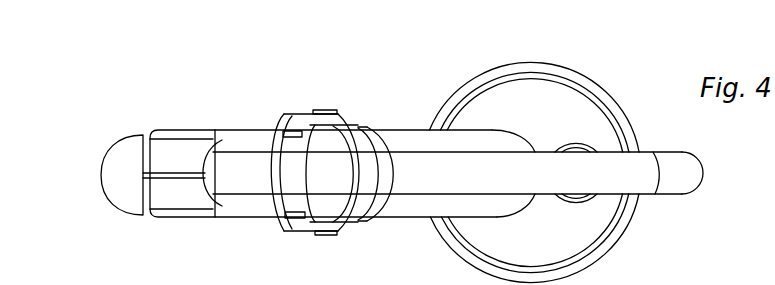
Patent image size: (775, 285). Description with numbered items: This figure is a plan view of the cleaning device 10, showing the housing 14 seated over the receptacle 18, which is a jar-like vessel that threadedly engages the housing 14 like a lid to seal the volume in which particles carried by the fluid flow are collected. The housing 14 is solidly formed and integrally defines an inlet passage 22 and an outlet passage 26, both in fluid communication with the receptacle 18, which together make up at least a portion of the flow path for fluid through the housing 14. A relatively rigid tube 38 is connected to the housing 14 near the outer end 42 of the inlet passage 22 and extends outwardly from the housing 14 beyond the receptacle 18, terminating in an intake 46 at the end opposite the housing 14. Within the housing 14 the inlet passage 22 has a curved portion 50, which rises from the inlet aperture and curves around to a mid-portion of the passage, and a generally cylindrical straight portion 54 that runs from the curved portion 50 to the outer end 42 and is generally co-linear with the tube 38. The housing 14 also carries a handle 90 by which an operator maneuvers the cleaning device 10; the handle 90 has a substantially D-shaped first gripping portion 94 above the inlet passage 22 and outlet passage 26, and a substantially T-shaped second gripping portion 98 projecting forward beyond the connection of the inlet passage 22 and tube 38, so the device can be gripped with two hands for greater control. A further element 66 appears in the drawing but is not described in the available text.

The cleaning device 10 is at (148, 86).
The housing 14 is at (611, 230).
The receptacle 18 is at (592, 77).
The inlet passage 22 is at (415, 219).
The outlet passage 26 is at (573, 204).
The tube 38 is at (132, 216).
The outer end 42 is at (343, 130).
The intake 46 is at (100, 178).
The curved portion 50 is at (513, 133).
The straight portion 54 is at (380, 130).
The locking nut 66 is at (323, 112).
The handle 90 is at (484, 196).
The first gripping portion 94 is at (543, 152).
The second gripping portion 98 is at (185, 218).